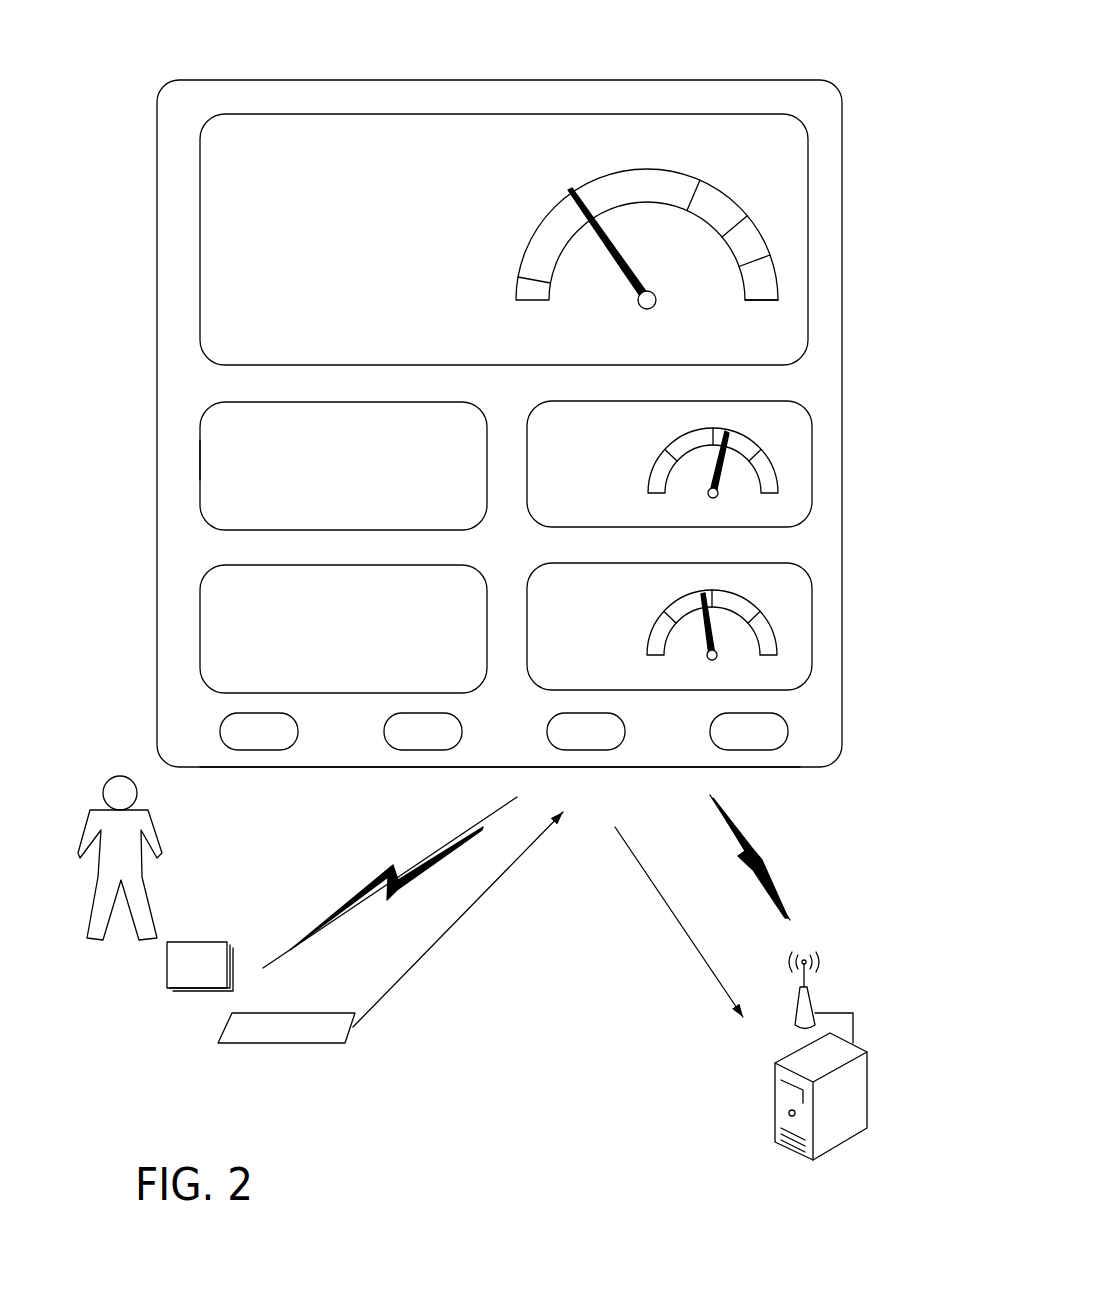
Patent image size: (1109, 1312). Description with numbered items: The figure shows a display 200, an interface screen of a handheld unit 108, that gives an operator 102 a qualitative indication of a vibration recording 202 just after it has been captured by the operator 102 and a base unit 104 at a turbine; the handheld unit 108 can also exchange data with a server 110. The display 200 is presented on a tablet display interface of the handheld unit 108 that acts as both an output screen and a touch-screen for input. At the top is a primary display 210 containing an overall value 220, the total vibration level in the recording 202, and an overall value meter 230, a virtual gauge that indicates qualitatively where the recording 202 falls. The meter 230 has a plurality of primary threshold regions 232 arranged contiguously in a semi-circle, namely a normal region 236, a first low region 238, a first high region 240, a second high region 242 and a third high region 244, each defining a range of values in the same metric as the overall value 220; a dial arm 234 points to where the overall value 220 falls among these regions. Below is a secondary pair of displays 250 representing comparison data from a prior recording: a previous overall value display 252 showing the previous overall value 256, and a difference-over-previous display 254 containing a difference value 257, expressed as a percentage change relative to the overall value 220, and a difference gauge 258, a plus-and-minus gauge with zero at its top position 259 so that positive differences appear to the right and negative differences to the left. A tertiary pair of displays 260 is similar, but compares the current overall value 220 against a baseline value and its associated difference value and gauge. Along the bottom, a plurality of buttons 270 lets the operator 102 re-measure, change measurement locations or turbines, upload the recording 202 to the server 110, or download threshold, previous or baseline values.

The display 200 is at (780, 82).
The handheld unit 108 is at (242, 767).
The primary display 210 is at (268, 112).
The overall value 220 is at (250, 205).
The overall value meter 230 is at (622, 232).
The primary threshold regions 232 is at (685, 167).
The dial arm 234 is at (610, 262).
The normal region 236 is at (613, 185).
The first low region 238 is at (535, 293).
The first high region 240 is at (710, 208).
The second high region 242 is at (752, 240).
The third high region 244 is at (752, 283).
The secondary pair of displays 250 is at (188, 465).
The previous overall value display 252 is at (198, 430).
The difference-over-previous display 254 is at (714, 444).
The previous overall value 256 is at (397, 447).
The difference value 257 is at (553, 443).
The difference gauge 258 is at (730, 444).
The top position 259 is at (712, 425).
The tertiary pair of displays 260 is at (190, 628).
The buttons 270 is at (190, 731).
The operator 102 is at (185, 853).
The base unit 104 is at (193, 992).
The vibration recording 202 is at (270, 1045).
The server 110 is at (838, 1145).